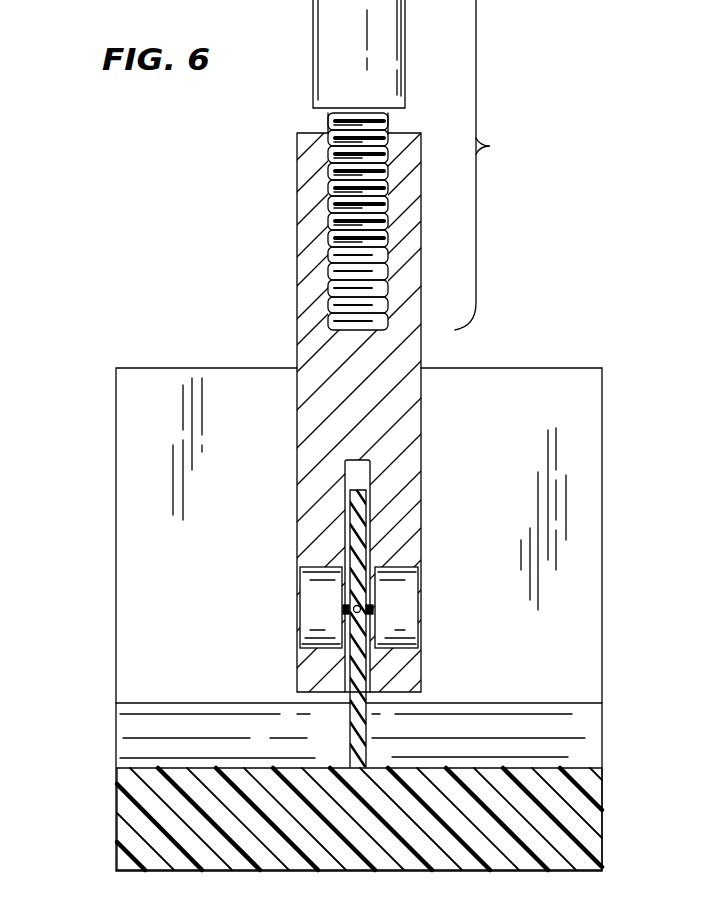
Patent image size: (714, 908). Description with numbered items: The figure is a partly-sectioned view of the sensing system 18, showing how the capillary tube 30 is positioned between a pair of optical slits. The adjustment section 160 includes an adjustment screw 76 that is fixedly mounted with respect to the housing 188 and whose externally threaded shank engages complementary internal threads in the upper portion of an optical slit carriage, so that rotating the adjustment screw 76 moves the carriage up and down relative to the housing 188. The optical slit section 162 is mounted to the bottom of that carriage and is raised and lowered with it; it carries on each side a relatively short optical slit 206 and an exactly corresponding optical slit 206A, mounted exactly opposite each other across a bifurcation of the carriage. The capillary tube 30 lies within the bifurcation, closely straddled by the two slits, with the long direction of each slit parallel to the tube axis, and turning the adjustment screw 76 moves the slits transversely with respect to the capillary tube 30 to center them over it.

The adjustment screw 76 is at (314, 65).
The adjustment section 160 is at (491, 165).
The sensing system 18 is at (252, 279).
The optical slit section 162 is at (450, 514).
The housing 188 is at (117, 806).
The optical slit 206 is at (343, 610).
The capillary tube 30 is at (362, 600).
The optical slit 206A is at (373, 610).